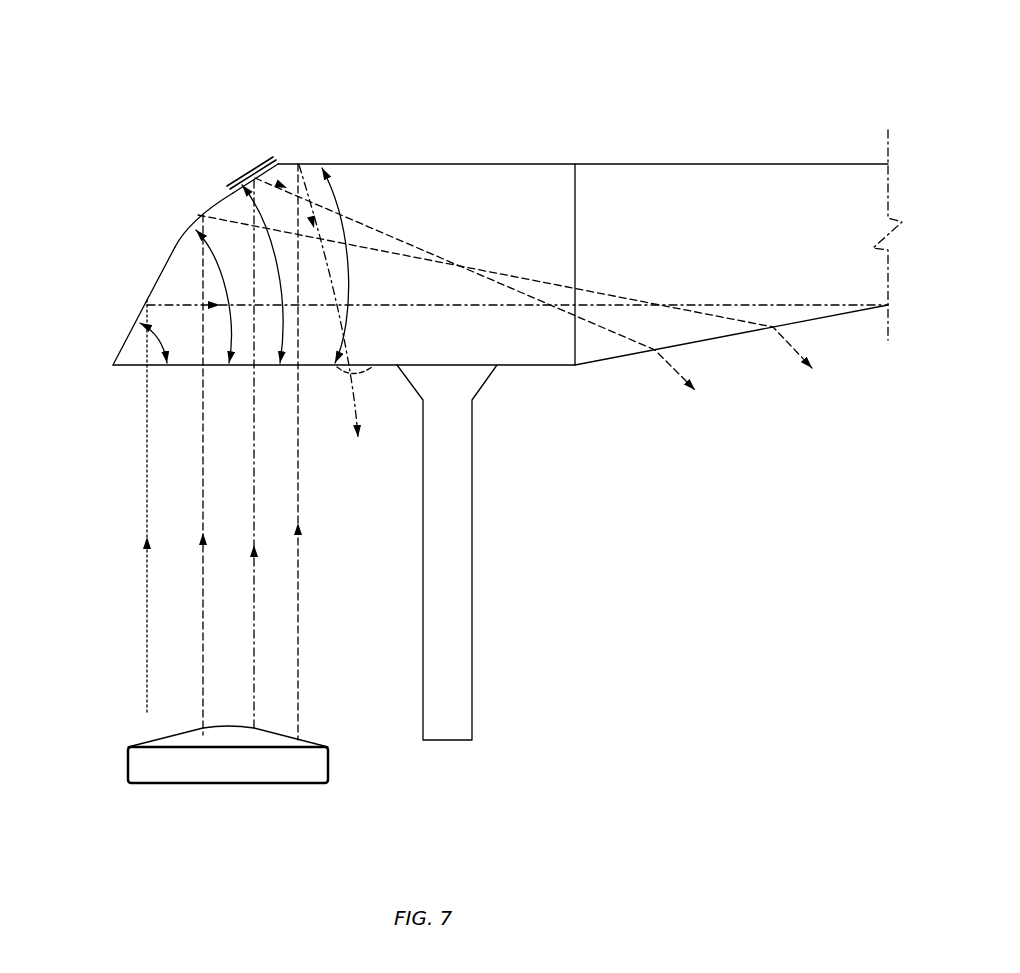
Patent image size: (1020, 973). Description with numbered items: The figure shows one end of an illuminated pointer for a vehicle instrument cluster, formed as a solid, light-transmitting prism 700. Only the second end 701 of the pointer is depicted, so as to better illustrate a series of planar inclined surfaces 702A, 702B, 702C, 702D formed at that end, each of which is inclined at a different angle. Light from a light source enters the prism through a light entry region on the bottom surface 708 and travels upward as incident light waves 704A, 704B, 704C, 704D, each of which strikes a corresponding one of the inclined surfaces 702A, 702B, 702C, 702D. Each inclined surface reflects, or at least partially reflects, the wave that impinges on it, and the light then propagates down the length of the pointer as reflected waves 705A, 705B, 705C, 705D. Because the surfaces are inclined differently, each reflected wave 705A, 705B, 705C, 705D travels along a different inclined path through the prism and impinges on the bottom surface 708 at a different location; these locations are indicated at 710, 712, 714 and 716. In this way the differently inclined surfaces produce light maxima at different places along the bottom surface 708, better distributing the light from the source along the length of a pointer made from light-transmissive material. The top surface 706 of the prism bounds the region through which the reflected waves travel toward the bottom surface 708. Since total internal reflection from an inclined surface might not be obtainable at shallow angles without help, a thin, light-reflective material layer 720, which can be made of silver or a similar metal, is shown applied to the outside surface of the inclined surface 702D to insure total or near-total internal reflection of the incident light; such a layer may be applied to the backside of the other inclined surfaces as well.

The light-transmitting prism 700 is at (142, 52).
The second end of the pointer 701 is at (90, 148).
The planar inclined surface 702A is at (113, 364).
The planar inclined surface 702B is at (158, 274).
The planar inclined surface 702C is at (198, 216).
The planar inclined surface 702D is at (165, 178).
The incident light wave 704A is at (147, 485).
The incident light wave 704B is at (203, 618).
The incident light wave 704C is at (254, 580).
The incident light wave 704D is at (298, 640).
The reflected wave 705A is at (386, 305).
The reflected wave 705B is at (226, 215).
The reflected wave 705C is at (390, 233).
The reflected wave 705D is at (350, 342).
The top surface of lens 706 is at (653, 164).
The bottom surface 708 is at (548, 366).
The impingement location 710 is at (867, 318).
The impingement location 712 is at (768, 340).
The impingement location 714 is at (652, 360).
The impingement location 716 is at (377, 377).
The light-reflective material layer 720 is at (262, 165).